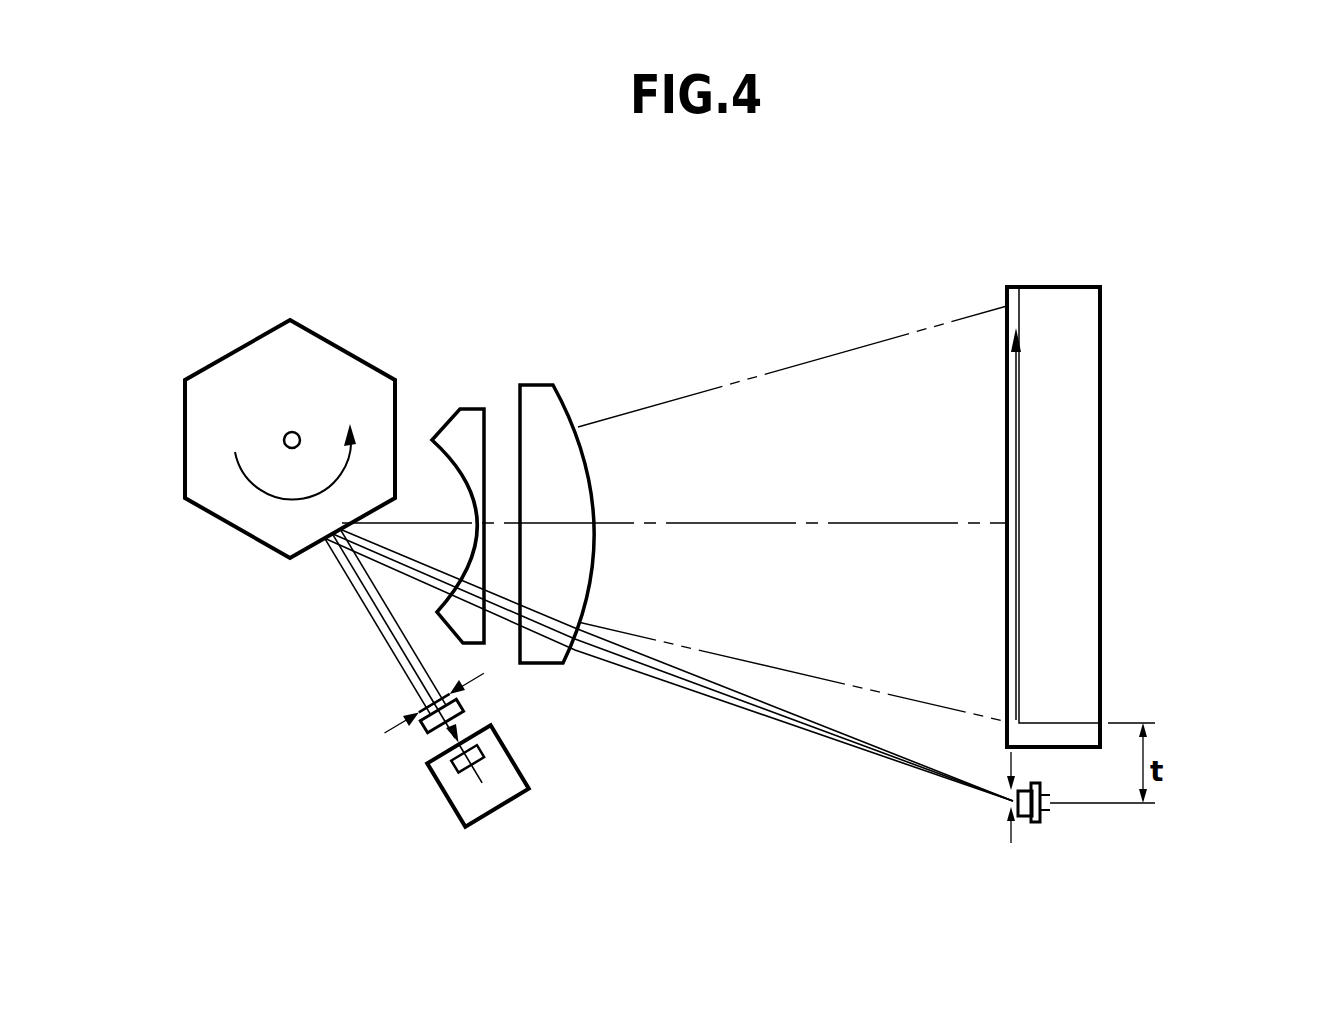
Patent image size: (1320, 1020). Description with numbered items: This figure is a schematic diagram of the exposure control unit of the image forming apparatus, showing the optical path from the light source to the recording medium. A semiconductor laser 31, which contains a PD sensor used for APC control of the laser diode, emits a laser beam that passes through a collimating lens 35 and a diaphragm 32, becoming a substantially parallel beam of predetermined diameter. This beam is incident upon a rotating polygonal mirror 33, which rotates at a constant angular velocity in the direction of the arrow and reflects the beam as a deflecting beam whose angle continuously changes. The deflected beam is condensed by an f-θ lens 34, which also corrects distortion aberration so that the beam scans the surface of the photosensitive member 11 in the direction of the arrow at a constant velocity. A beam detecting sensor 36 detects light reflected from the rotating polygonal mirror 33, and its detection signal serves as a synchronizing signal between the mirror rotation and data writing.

The photosensitive member 11 is at (1020, 286).
The semiconductor laser 31 is at (446, 772).
The diaphragm 32 is at (385, 733).
The rotating polygonal mirror 33 is at (227, 352).
The f-θ lens 34 is at (563, 373).
The collimating lens 35 is at (428, 733).
The beam detecting sensor 36 is at (1026, 820).